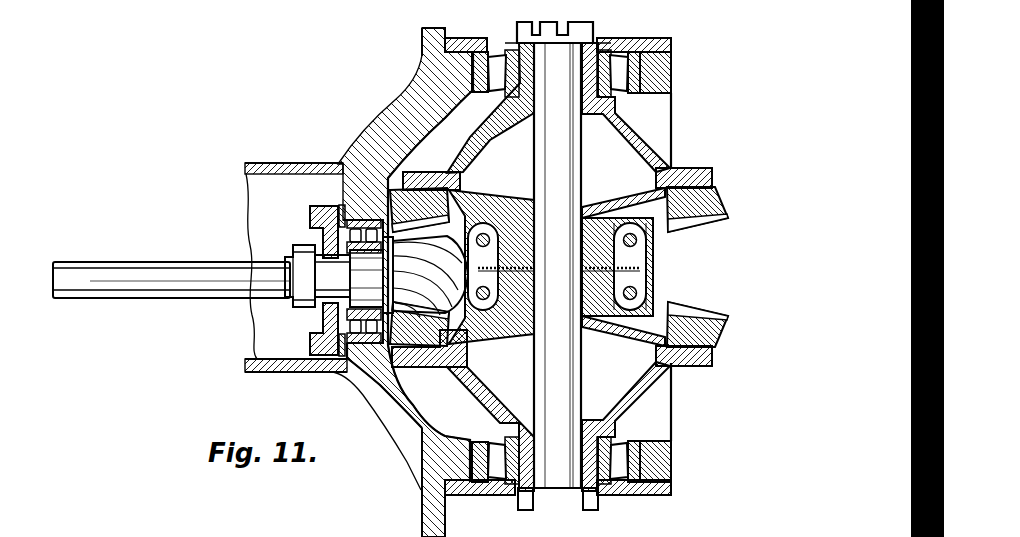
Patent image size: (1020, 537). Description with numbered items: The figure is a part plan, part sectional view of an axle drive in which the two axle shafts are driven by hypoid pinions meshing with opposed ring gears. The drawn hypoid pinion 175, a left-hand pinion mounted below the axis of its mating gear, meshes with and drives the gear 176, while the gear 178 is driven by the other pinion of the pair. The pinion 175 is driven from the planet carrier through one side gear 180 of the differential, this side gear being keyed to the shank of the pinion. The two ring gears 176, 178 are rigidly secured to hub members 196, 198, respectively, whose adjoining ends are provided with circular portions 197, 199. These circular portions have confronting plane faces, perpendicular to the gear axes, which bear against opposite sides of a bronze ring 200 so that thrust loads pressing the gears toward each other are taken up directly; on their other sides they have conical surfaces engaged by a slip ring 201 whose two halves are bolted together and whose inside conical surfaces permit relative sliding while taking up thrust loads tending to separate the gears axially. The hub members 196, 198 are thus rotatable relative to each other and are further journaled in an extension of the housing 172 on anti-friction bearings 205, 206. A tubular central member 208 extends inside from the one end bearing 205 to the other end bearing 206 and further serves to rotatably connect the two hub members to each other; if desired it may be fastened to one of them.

The housing 172 is at (386, 128).
The hypoid pinion 175 is at (445, 303).
The gear 176 is at (708, 365).
The gear 178 is at (690, 203).
The side gear 180 is at (331, 345).
The hub member 196 is at (633, 398).
The circular portion 197 is at (648, 290).
The hub member 198 is at (470, 206).
The circular portion 199 is at (646, 247).
The bronze ring 200 is at (641, 266).
The slip ring 201 is at (641, 278).
The anti-friction bearing 205 is at (478, 460).
The anti-friction bearing 206 is at (673, 71).
The tubular central member 208 is at (548, 391).